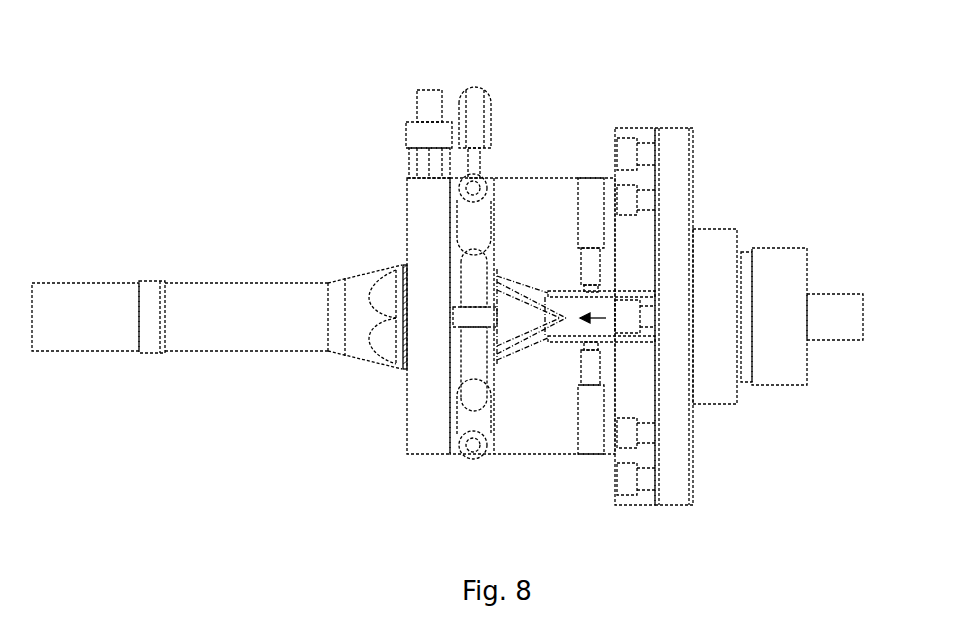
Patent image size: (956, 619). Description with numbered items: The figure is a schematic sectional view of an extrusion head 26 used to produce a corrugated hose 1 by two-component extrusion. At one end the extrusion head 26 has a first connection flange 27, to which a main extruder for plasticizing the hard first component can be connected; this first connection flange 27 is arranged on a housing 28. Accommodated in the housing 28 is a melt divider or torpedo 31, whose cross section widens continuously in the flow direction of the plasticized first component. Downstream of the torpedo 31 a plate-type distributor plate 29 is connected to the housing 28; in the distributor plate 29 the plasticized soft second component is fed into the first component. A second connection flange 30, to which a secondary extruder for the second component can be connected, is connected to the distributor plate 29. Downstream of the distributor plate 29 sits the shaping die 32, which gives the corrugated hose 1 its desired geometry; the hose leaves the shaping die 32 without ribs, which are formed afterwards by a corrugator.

The corrugated hose 1 is at (102, 283).
The shaping die 32 is at (266, 283).
The extrusion head 26 is at (548, 268).
The distributor plate 29 is at (428, 457).
The second connection flange 30 is at (428, 106).
The housing 28 is at (537, 457).
The torpedo 31 is at (519, 308).
The first connection flange 27 is at (838, 294).